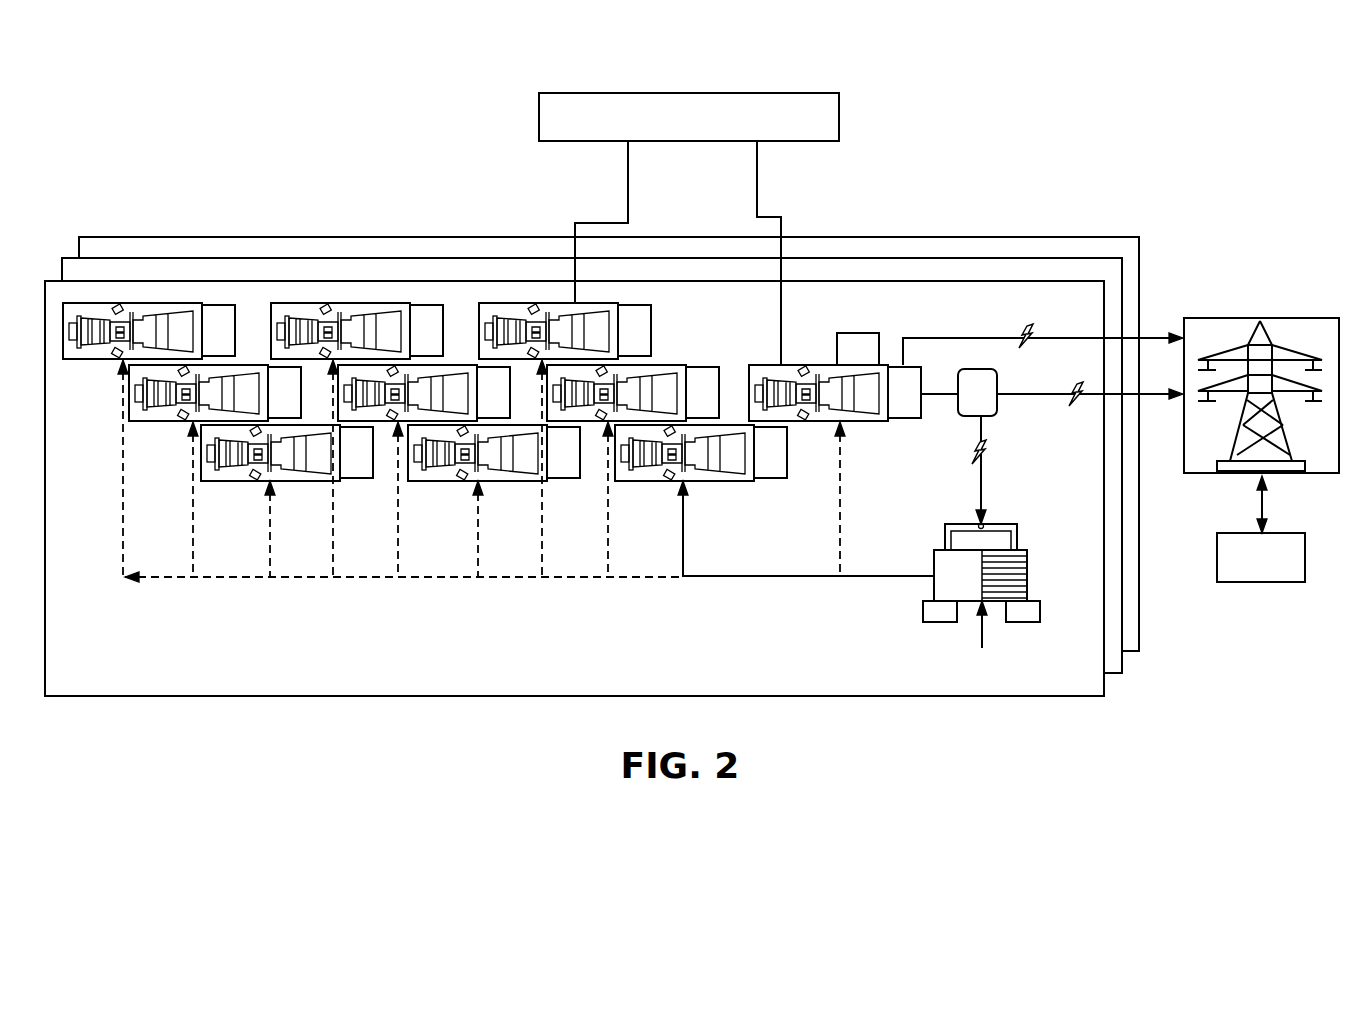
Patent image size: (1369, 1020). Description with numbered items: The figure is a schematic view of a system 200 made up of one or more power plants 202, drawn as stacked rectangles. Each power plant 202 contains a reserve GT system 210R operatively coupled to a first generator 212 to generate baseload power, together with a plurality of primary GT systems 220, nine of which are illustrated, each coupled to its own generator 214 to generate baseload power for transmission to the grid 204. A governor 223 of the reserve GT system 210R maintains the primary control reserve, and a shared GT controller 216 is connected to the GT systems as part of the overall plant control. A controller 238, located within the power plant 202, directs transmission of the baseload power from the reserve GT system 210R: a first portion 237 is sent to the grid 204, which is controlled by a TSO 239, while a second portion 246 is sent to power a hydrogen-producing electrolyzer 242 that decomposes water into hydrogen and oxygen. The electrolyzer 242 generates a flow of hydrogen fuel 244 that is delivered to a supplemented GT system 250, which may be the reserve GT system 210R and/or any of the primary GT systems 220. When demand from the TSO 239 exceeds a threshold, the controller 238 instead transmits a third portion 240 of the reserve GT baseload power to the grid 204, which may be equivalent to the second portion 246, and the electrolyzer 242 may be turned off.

The system 200 is at (637, 394).
The power plant 202 is at (380, 280).
The grid 204 is at (1285, 318).
The reserve GT system 210R is at (822, 364).
The first generator 212 is at (912, 365).
The generator 214 is at (218, 304).
The GT controller 216 is at (808, 132).
The primary GT system 220 is at (140, 302).
The governor 223 is at (845, 333).
The first portion of the baseload power 237 is at (1152, 335).
The controller 238 is at (977, 369).
The TSO 239 is at (1260, 582).
The third portion of the baseload power 240 is at (1052, 394).
The hydrogen-producing electrolyzer 242 is at (923, 612).
The hydrogen fuel 244 is at (798, 578).
The second portion of the baseload power 246 is at (983, 495).
The supplemented GT system 250 is at (475, 411).